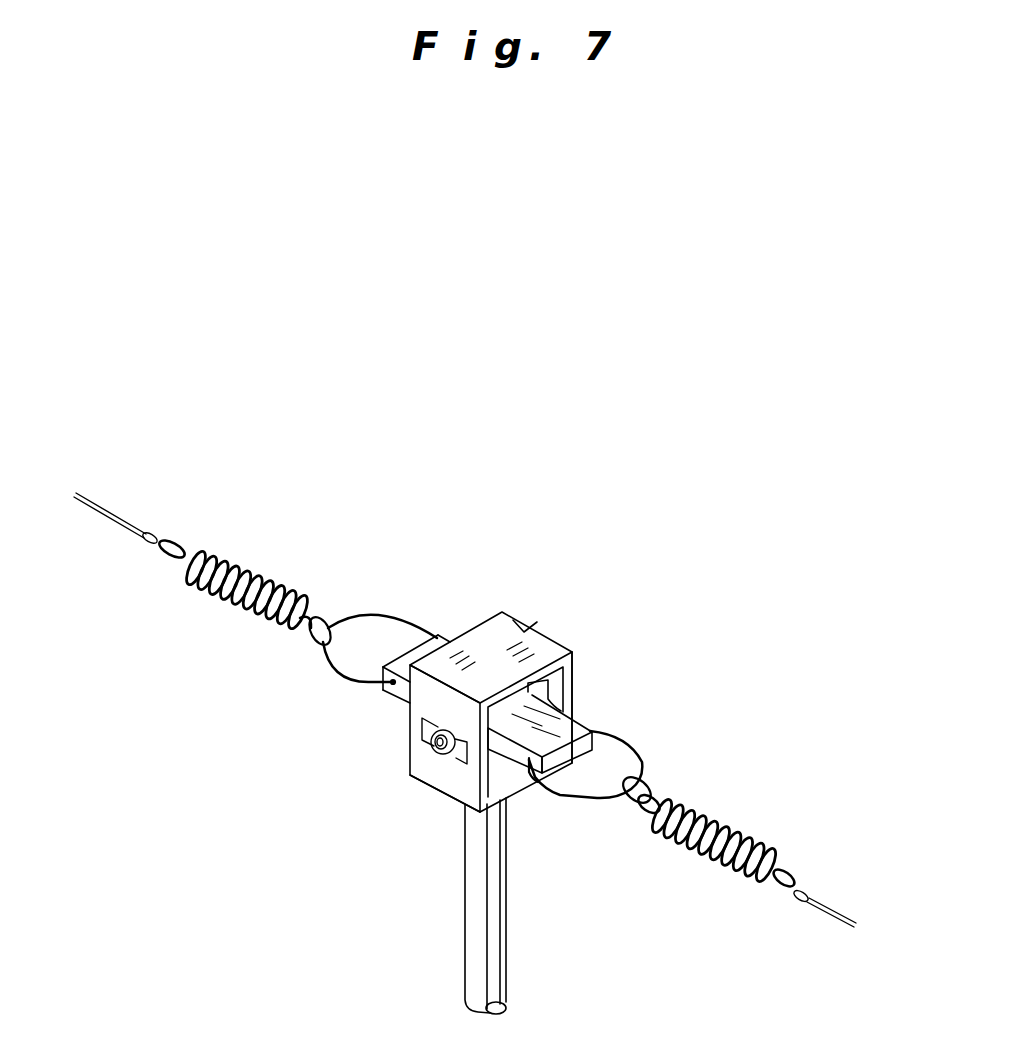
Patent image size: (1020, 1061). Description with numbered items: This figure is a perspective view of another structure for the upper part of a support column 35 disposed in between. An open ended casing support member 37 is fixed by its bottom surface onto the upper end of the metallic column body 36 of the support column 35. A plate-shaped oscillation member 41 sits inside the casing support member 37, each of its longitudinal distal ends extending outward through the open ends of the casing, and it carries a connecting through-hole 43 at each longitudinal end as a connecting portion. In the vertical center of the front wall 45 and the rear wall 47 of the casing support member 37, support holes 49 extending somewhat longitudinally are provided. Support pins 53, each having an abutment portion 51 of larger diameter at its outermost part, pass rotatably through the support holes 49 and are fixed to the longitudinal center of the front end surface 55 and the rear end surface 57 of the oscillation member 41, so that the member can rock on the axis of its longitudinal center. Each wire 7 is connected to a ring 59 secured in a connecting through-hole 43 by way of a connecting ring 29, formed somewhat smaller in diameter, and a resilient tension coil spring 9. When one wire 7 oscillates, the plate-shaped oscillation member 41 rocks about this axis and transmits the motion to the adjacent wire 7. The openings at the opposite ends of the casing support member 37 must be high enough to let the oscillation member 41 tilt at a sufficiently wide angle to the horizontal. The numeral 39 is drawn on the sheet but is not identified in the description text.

The wire 7 is at (115, 512).
The resilient tension coil spring 9 is at (247, 563).
The connecting ring 29 is at (333, 617).
The support column 35 is at (595, 1015).
The metallic column body 36 is at (487, 947).
The casing support member 37 is at (519, 630).
The front wall 39 is at (463, 790).
The plate-shaped oscillation member 41 is at (635, 706).
The connecting through-hole 43 is at (446, 799).
The front wall 45 is at (432, 663).
The rear wall 47 is at (556, 634).
The support hole 49 is at (570, 705).
The abutment portion 51 is at (412, 743).
The support pin 53 is at (417, 783).
The front end surface 55 is at (517, 790).
The rear end surface 57 is at (585, 725).
The ring 59 is at (415, 613).